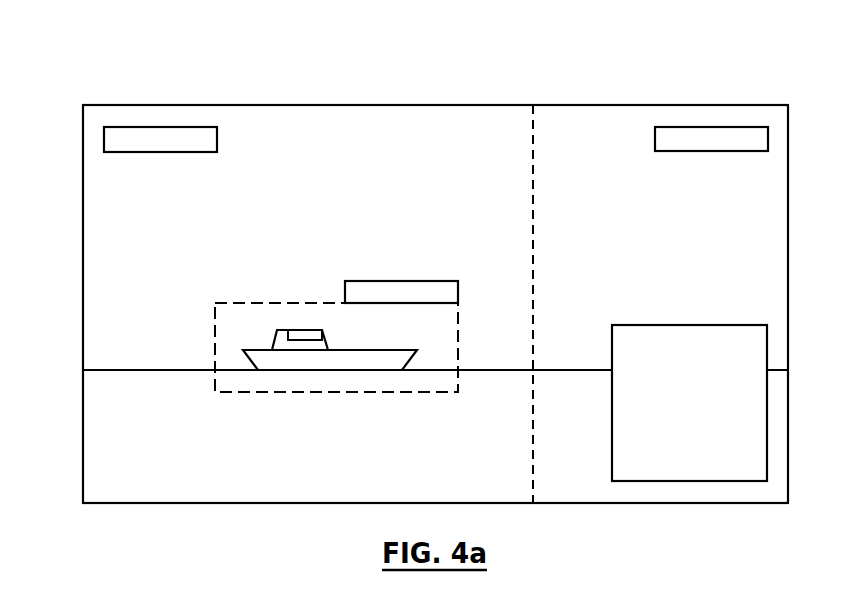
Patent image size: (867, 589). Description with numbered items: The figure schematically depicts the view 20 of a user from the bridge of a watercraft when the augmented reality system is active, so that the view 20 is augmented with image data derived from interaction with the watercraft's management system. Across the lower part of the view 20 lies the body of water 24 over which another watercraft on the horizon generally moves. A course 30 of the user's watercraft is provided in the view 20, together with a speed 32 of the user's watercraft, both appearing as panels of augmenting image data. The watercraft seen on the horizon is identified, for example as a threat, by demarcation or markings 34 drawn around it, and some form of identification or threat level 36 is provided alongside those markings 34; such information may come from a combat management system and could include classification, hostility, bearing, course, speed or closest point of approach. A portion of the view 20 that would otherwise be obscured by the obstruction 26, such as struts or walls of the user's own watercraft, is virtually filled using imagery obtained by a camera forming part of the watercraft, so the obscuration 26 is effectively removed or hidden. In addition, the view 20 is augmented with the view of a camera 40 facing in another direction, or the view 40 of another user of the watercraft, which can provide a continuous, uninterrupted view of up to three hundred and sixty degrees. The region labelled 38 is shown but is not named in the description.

The view 20 is at (69, 122).
The body of water 24 is at (142, 408).
The obstruction 26 is at (527, 135).
The course 30 is at (180, 165).
The speed 32 is at (655, 152).
The demarcation or markings 34 is at (403, 405).
The identification or threat level 36 is at (408, 272).
The right region 38 is at (697, 243).
The view of a camera 40 is at (602, 345).